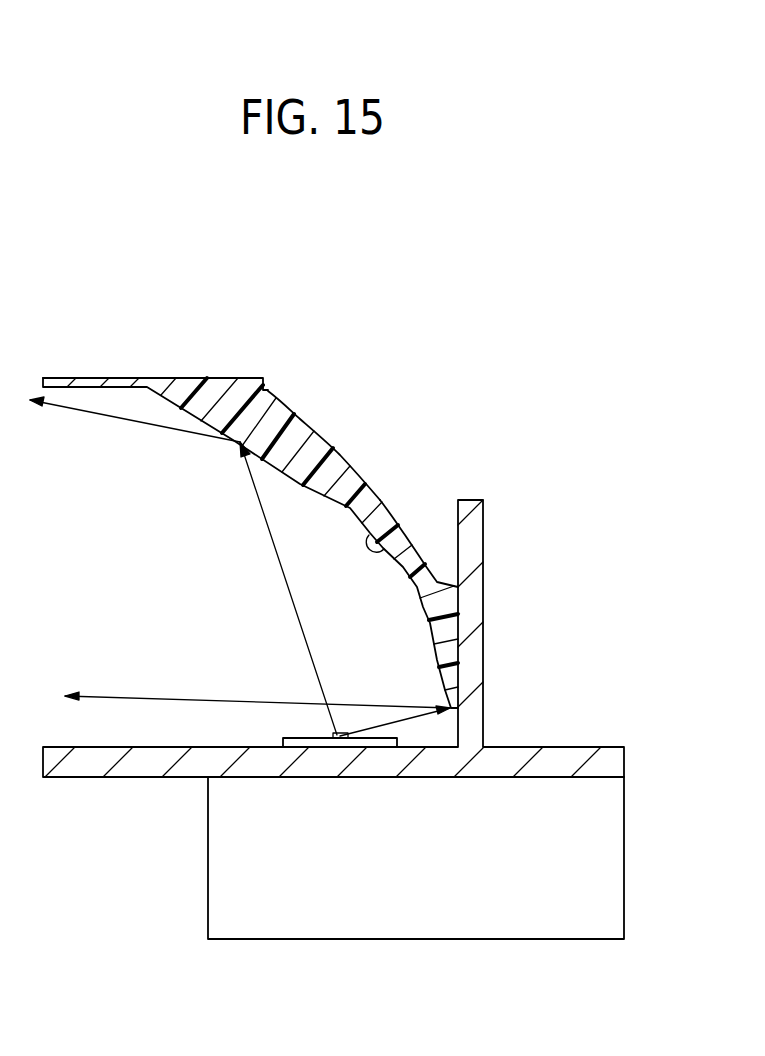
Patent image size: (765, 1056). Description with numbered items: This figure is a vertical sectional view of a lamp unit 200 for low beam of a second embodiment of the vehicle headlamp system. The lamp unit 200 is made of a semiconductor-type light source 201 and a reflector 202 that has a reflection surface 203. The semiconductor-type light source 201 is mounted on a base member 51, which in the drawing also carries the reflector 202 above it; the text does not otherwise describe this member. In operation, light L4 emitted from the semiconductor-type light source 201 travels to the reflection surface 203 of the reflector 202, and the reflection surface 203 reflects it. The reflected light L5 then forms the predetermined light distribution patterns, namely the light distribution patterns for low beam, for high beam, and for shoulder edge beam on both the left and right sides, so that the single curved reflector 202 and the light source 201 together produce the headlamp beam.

The lamp unit for low beam 200 is at (279, 498).
The semiconductor-type light source 201 is at (342, 733).
The reflector 202 is at (338, 452).
The reflection surface 203 is at (380, 515).
The housing bracket 51 is at (518, 757).
The light from the semiconductor-type light source L4 is at (263, 525).
The reflected light L5 is at (105, 417).